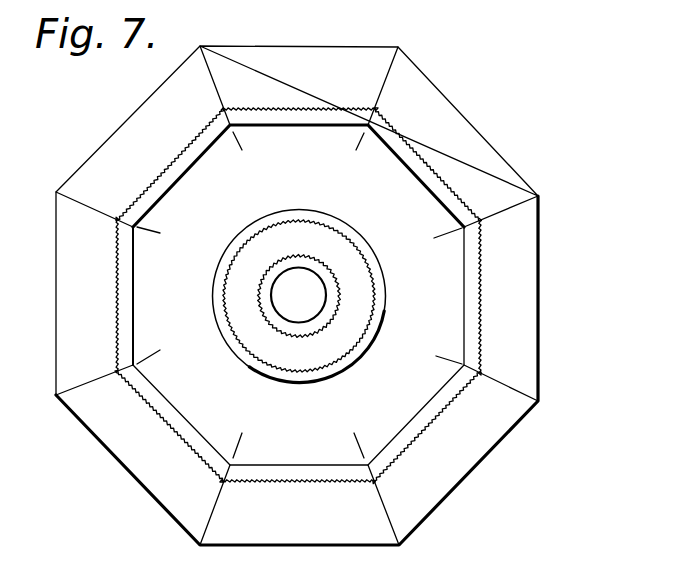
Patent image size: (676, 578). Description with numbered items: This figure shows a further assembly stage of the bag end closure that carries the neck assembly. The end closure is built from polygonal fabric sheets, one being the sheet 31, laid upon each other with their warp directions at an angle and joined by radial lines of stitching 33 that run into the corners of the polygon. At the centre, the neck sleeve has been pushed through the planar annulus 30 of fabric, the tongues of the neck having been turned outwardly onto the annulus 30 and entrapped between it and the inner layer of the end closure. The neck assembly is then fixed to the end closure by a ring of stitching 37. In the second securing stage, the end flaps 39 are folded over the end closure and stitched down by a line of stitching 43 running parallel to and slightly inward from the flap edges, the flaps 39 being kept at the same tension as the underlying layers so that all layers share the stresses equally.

The planar annulus 30 is at (290, 380).
The fabric sheet 31 is at (394, 193).
The radial lines of stitching 33 is at (436, 356).
The ring of stitching 37 is at (310, 252).
The end flaps 39 is at (524, 278).
The line of stitching 43 is at (483, 250).